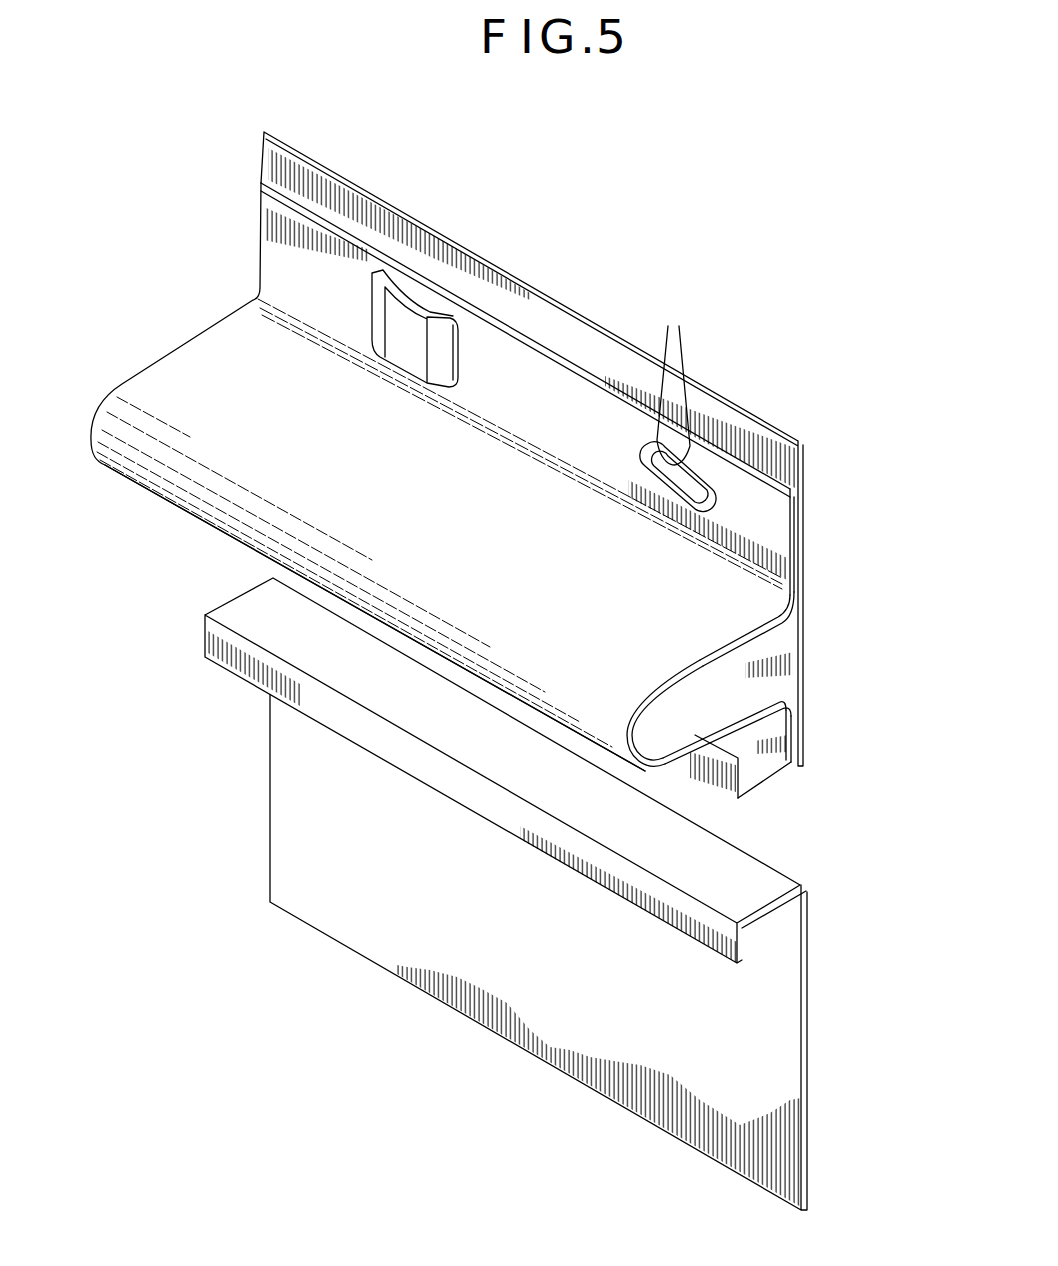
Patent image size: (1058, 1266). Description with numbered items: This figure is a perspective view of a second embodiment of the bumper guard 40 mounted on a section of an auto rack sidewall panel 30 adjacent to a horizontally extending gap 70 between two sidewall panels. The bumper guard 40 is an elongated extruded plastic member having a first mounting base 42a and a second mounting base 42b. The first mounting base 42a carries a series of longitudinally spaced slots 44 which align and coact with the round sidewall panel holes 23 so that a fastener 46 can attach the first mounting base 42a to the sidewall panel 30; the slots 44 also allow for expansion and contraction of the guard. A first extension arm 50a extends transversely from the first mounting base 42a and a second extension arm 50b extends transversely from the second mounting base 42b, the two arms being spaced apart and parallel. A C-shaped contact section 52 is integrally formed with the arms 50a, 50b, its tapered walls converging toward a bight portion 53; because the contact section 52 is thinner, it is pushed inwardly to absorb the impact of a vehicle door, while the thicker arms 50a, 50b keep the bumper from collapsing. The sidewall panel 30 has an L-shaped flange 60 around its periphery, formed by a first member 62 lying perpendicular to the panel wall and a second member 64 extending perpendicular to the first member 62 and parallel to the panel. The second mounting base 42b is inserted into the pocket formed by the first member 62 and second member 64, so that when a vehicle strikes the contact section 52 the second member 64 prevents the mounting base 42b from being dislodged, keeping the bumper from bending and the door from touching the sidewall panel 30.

The sidewall panel 30 is at (805, 632).
The bumper guard 40 is at (494, 537).
The first mounting base 42a is at (793, 525).
The second mounting base 42b is at (797, 735).
The slot 44 is at (693, 468).
The fastener 46 is at (405, 323).
The sidewall panel hole 23 is at (670, 380).
The first extension arm 50a is at (747, 623).
The second extension arm 50b is at (748, 730).
The contact section 52 is at (648, 693).
The bight portion 53 is at (627, 743).
The L-shaped flange 60 is at (784, 820).
The first member 62 is at (773, 787).
The second member 64 is at (708, 770).
The gap 70 is at (788, 820).